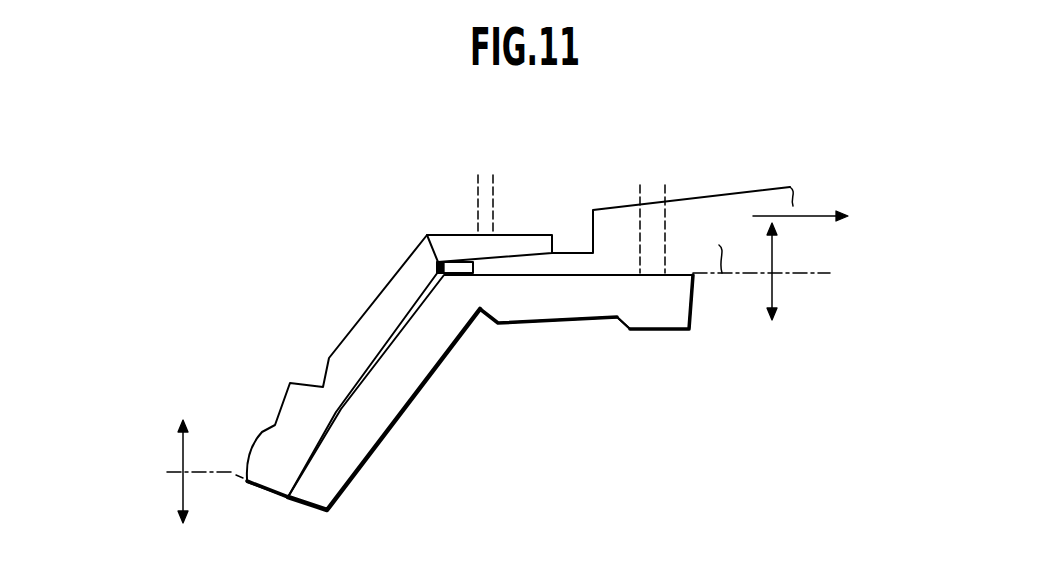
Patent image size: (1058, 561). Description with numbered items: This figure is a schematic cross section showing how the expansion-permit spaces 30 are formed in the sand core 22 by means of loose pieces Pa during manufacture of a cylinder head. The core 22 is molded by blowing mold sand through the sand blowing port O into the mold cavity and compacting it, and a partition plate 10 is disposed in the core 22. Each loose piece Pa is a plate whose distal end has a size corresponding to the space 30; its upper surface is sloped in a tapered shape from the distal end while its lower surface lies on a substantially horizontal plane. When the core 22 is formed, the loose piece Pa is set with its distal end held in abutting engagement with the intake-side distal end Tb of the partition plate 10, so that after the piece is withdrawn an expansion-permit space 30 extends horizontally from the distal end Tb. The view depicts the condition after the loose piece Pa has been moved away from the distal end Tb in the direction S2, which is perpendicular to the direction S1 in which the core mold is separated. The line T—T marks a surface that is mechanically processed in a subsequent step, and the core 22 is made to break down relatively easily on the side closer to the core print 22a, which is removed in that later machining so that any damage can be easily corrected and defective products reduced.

The partition plate 10 is at (399, 301).
The core 22 is at (393, 435).
The core print 22a is at (596, 298).
The expansion-permit space 30 is at (443, 260).
The line T— T is at (440, 262).
The intake-side distal end of the partition plate Tb is at (437, 266).
The sand blowing port O is at (497, 190).
The loose piece Pa is at (747, 192).
The direction S2 is at (826, 210).
The direction S1 is at (775, 262).